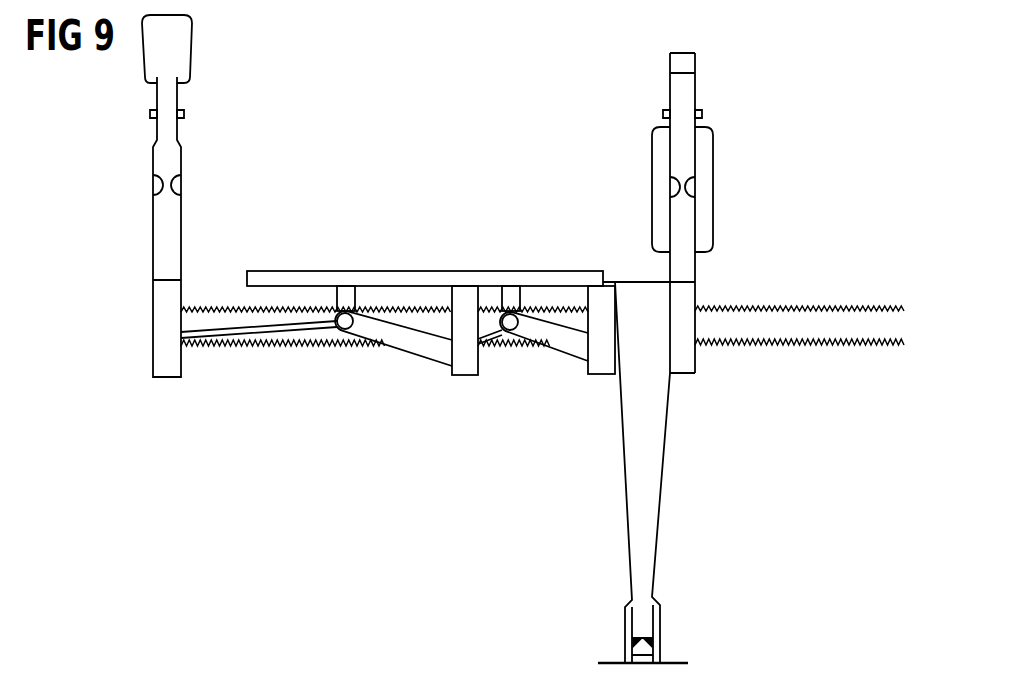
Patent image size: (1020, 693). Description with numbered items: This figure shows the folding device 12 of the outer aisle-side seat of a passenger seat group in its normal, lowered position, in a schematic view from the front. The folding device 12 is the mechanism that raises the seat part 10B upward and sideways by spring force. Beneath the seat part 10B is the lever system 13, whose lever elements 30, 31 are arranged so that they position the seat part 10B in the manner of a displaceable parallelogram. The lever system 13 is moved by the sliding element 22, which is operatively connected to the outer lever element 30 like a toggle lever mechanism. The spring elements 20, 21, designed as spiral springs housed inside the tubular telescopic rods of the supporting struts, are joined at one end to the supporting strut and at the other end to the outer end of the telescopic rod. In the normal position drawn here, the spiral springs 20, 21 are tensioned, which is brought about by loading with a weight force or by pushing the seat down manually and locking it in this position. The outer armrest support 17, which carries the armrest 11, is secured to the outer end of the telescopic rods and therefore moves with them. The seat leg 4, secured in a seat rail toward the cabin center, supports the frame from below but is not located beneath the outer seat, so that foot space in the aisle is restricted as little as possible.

The seat leg 4 is at (648, 498).
The armrest 11 is at (180, 50).
The folding device 12 is at (447, 395).
The lever system 13 is at (411, 300).
The outer armrest support 17 is at (168, 227).
The seat part 10B is at (303, 282).
The spring element 20 is at (818, 352).
The spring element 21 is at (808, 305).
The sliding element 22 is at (213, 350).
The outer lever element 30 is at (403, 342).
The lever element 31 is at (575, 343).